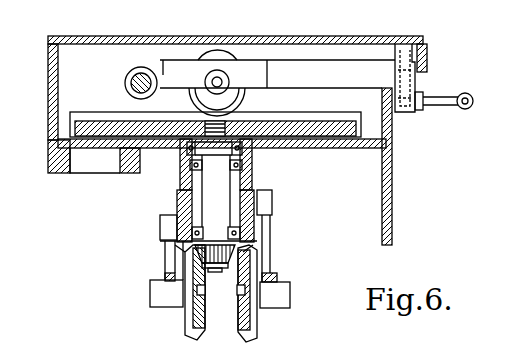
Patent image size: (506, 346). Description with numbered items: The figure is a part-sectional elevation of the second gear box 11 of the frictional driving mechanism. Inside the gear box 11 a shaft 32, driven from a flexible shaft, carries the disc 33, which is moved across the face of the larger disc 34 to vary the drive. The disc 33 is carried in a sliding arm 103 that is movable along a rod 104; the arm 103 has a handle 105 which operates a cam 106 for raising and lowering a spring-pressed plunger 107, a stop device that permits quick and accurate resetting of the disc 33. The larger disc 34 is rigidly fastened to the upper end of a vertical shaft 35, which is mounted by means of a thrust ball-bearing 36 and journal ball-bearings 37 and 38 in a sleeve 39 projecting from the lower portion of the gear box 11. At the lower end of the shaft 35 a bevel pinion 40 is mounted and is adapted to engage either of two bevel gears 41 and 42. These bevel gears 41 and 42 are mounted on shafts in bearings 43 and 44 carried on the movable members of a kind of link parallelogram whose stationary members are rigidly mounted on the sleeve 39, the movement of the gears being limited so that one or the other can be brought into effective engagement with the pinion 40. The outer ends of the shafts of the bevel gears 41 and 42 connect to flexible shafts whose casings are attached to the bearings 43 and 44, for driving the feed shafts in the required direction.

The gear box 11 is at (53, 80).
The shaft 32 is at (217, 82).
The disc 33 is at (220, 50).
The larger disc 34 is at (318, 122).
The vertical shaft 35 is at (215, 186).
The thrust ball-bearing 36 is at (176, 165).
The journal ball-bearing 37 is at (178, 185).
The journal ball-bearing 38 is at (170, 244).
The sleeve 39 is at (258, 226).
The bevel pinion 40 is at (260, 252).
The bevel gear 41 is at (192, 327).
The bevel gear 42 is at (250, 322).
The bearing 43 is at (155, 288).
The bearing 44 is at (278, 302).
The sliding arm 103 is at (302, 70).
The rod 104 is at (128, 78).
The handle 105 is at (466, 109).
The cam 106 is at (410, 116).
The spring-pressed plunger 107 is at (428, 45).